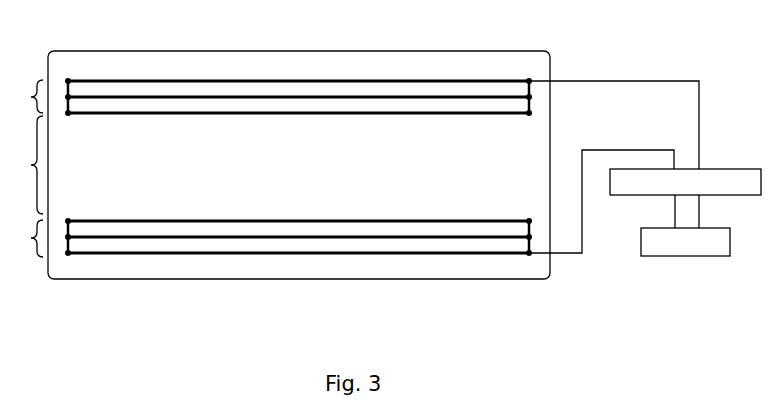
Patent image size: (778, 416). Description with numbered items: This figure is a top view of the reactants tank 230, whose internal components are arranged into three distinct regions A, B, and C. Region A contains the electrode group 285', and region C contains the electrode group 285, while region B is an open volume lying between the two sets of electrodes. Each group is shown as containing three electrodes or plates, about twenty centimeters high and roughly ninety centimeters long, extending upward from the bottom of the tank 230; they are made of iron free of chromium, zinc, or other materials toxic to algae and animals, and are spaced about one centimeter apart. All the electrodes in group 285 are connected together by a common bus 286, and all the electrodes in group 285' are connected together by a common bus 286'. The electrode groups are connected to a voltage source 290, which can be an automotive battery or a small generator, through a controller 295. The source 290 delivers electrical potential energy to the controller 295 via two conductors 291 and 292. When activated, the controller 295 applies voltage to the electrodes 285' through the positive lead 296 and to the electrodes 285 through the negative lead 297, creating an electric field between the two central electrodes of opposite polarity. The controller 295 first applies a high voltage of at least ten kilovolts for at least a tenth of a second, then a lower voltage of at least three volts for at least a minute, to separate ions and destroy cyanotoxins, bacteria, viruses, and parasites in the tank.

The reactants tank 230 is at (295, 51).
The electrode group 285 is at (298, 269).
The electrode group 285' is at (298, 64).
The common bus 286 is at (298, 272).
The common bus 286' is at (338, 66).
The voltage source 290 is at (712, 256).
The conductor 291 is at (699, 206).
The conductor 292 is at (675, 206).
The controller 295 is at (744, 169).
The positive lead 296 is at (666, 81).
The negative lead 297 is at (582, 246).
The region A is at (29, 90).
The region B is at (28, 165).
The region C is at (28, 247).